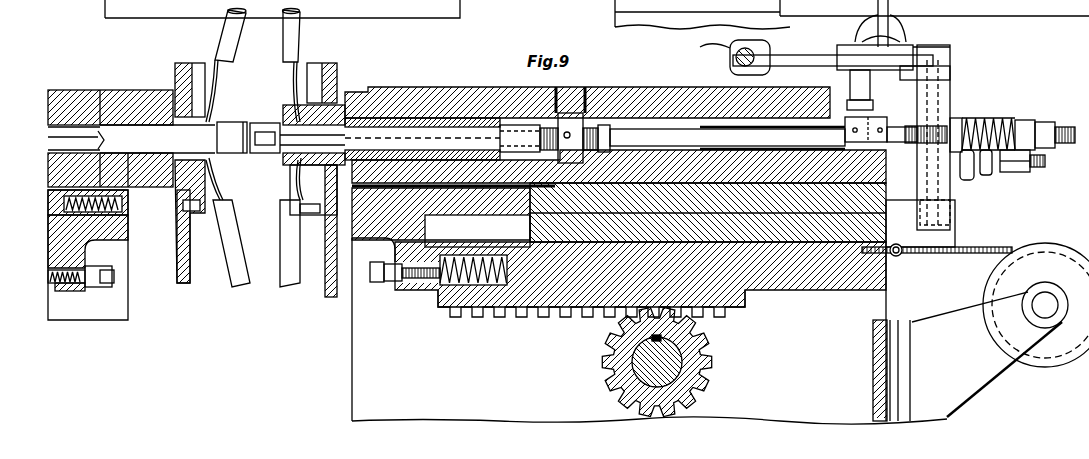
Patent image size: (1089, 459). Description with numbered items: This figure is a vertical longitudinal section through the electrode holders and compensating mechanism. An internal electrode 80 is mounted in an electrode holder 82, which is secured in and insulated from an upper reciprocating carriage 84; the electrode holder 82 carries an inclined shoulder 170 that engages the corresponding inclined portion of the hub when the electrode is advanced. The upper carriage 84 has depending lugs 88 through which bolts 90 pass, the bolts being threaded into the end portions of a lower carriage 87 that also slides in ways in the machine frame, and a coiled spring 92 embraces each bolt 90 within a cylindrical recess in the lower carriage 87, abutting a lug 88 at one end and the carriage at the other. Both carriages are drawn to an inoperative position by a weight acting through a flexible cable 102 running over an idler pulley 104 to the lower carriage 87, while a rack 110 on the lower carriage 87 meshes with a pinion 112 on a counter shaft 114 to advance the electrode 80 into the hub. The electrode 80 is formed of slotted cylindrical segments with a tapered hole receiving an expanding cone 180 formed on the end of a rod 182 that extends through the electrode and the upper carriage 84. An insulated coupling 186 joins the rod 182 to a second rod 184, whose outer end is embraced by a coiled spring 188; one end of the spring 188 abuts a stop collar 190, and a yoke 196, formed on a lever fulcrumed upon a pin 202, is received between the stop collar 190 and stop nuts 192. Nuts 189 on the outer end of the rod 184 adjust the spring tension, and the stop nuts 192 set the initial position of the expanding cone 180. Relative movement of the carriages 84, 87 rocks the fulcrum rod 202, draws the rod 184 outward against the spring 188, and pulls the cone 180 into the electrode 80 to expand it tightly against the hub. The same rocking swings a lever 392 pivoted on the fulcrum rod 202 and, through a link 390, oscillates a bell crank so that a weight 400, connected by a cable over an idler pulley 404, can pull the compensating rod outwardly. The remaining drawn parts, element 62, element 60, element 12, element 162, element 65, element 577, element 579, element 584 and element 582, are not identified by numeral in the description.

The head block 62 is at (103, 90).
The rod 182 is at (60, 137).
The internal electrode 80 is at (198, 135).
The inclined shoulder 170 is at (297, 110).
The chuck insert 60 is at (260, 122).
The expanding cone 180 is at (268, 140).
The tool holder bars 12 is at (191, 283).
The electrode holder 82 is at (408, 88).
The actuating rod 162 is at (433, 130).
The coupling block 65 is at (570, 110).
The upper reciprocating carriage 84 is at (681, 87).
The insulated coupling 186 is at (869, 143).
The stop nut 192 is at (910, 146).
The pivot boss 577 is at (755, 52).
The pivot pin 579 is at (709, 38).
The arm 584 is at (818, 55).
The clamp bolt 582 is at (848, 78).
The idler pulley 404 is at (868, 30).
The weight 400 is at (905, 26).
The link 390 is at (920, 60).
The lever 392 is at (960, 50).
The yoke 196 is at (927, 117).
The stop collar 190 is at (949, 122).
The coiled spring 188 is at (1000, 120).
The nut 189 is at (1040, 124).
The second rod 184 is at (1045, 142).
The fulcrum pin 202 is at (940, 178).
The flexible cable 102 is at (992, 247).
The idler pulley 104 is at (975, 290).
The lower carriage 87 is at (128, 235).
The depending lug 88 is at (78, 293).
The bolt 90 is at (117, 275).
The coiled spring 92 is at (477, 231).
The rack 110 is at (490, 318).
The pinion 112 is at (625, 368).
The counter shaft 114 is at (672, 360).